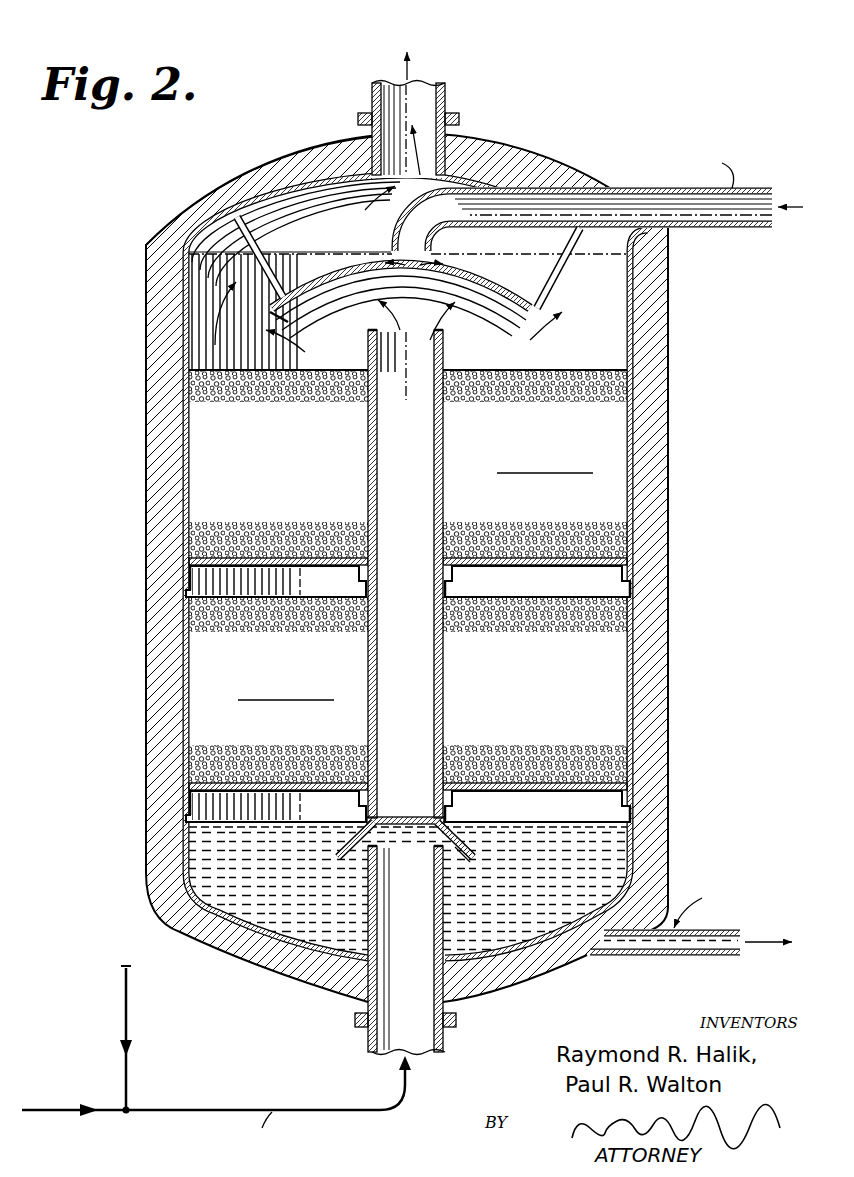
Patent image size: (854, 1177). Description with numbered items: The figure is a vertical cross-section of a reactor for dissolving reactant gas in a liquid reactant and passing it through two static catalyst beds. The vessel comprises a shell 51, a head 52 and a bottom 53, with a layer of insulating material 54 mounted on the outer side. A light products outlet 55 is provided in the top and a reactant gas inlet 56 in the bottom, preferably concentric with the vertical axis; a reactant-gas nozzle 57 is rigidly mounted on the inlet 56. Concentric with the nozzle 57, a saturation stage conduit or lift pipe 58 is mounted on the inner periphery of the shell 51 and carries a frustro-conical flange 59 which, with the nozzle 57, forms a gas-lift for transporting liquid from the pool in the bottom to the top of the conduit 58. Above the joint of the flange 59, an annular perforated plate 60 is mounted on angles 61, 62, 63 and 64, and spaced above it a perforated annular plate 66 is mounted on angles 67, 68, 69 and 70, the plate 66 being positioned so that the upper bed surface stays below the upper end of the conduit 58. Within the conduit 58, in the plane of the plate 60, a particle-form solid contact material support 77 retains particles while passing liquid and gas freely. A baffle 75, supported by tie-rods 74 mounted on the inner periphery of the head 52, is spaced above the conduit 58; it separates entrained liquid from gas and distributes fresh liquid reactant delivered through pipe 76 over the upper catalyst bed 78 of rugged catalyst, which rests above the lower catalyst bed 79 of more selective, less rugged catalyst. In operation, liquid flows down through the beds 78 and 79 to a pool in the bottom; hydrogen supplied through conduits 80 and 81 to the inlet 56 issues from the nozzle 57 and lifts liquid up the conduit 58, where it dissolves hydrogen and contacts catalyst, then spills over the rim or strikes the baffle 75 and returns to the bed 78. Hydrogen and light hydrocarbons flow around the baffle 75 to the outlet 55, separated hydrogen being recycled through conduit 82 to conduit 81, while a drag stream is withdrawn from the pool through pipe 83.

The shell 51 is at (183, 340).
The head 52 is at (292, 182).
The bottom 53 is at (238, 955).
The layer of insulating material 54 is at (215, 200).
The light products outlet 55 is at (460, 130).
The reactant gas inlet 56 is at (365, 1003).
The reactant-gas nozzle 57 is at (445, 918).
The saturation stage conduit 58 is at (370, 479).
The frustro-conical flange 59 is at (458, 858).
The annular perforated plate 60 is at (543, 792).
The angle 61 is at (190, 805).
The angle 62 is at (365, 800).
The angle 63 is at (446, 803).
The angle 64 is at (630, 800).
The perforated annular plate 66 is at (546, 567).
The angle 67 is at (190, 580).
The angle 68 is at (366, 575).
The angle 69 is at (446, 580).
The angle 70 is at (630, 578).
The tie-rods 74 is at (283, 266).
The baffle 75 is at (360, 263).
The pipe 76 is at (725, 229).
The particle-form solid contact material support 77 is at (395, 795).
The upper catalyst bed 78 is at (205, 492).
The lower catalyst bed 79 is at (607, 668).
The conduit 80 is at (50, 1108).
The conduit 81 is at (340, 1108).
The conduit 82 is at (126, 1004).
The pipe 83 is at (690, 957).